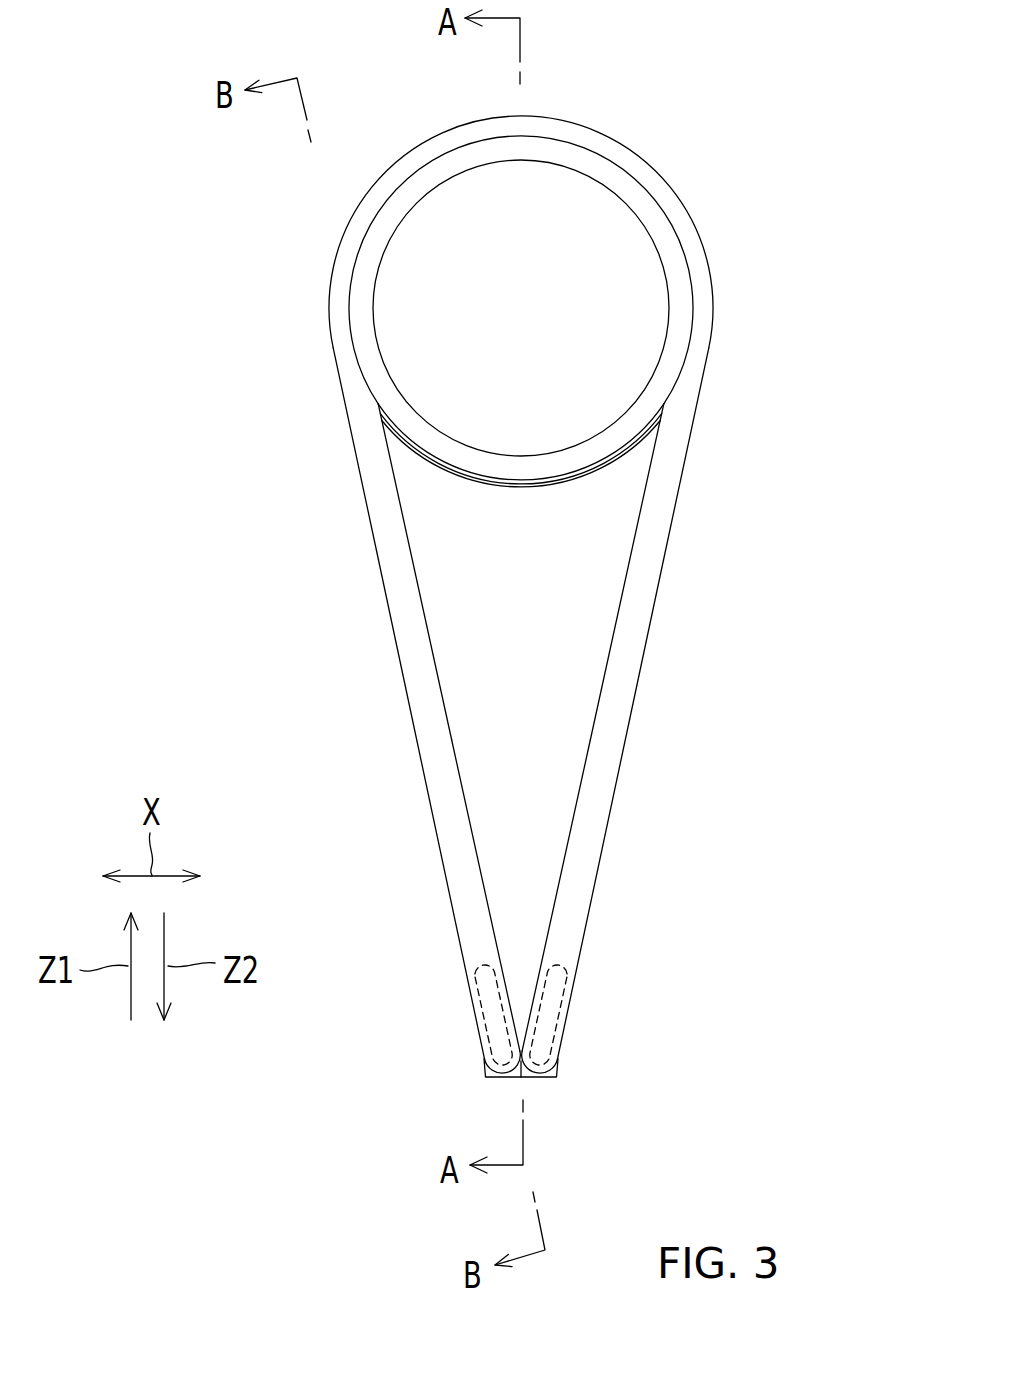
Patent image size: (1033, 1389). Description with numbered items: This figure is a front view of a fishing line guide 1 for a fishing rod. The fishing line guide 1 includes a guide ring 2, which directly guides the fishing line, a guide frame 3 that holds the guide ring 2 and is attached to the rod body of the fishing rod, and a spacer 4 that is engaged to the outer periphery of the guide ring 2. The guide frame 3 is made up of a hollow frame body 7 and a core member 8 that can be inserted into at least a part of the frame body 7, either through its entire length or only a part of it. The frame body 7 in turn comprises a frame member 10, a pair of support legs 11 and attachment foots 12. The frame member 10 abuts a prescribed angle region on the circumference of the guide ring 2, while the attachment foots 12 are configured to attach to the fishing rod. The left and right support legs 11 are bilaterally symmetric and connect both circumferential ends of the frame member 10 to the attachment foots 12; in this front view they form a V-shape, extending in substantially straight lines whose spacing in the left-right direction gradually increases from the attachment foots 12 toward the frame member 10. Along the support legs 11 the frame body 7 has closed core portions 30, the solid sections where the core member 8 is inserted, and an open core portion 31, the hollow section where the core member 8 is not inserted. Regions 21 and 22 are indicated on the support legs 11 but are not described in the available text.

The fishing line guide 1 is at (829, 73).
The guide ring 2 is at (521, 308).
The guide frame 3 is at (594, 232).
The spacer 4 is at (520, 521).
The frame body 7 is at (576, 572).
The core member 8 is at (524, 1016).
The frame member 10 is at (523, 243).
The support leg 11 is at (523, 889).
The attachment foot 12 is at (468, 1136).
The first leg section 21 is at (520, 454).
The second leg section 22 is at (521, 640).
The closed core portion 30 is at (520, 1076).
The open core portion 31 is at (605, 895).